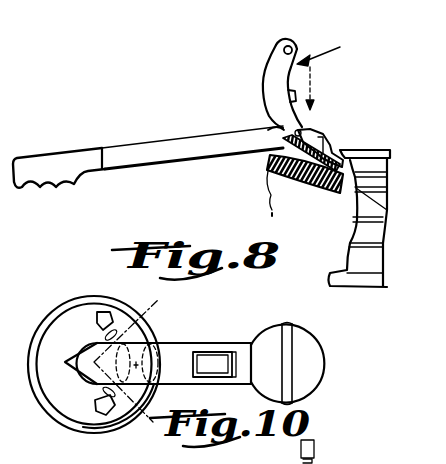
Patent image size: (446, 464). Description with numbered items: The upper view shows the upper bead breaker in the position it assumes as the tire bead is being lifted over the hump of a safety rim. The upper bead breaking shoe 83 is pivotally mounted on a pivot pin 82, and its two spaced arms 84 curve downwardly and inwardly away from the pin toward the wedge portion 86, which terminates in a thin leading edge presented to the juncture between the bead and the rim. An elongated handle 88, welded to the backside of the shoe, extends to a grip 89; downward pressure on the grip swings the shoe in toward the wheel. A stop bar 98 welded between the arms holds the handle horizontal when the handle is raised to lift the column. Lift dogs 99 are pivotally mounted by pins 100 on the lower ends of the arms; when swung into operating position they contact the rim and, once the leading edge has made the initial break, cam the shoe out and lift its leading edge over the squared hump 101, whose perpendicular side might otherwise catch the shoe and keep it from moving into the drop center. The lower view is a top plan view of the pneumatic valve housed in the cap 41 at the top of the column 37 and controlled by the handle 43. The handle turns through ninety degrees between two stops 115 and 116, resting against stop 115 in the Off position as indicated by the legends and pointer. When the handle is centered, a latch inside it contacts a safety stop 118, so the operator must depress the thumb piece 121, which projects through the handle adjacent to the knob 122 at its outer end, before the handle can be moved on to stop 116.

In FIG. 10, the column 37 is at (64, 425).
In FIG. 10, the cap 41 is at (47, 404).
In FIG. 10, the handle 43 is at (241, 343).
In FIG. 8, the pivot pin 82 is at (286, 42).
In FIG. 8, the upper bead breaking shoe 83 is at (328, 53).
In FIG. 8, the arms 84 is at (275, 76).
In FIG. 8, the wedge portion 86 is at (358, 148).
In FIG. 8, the handle 88 is at (155, 150).
In FIG. 8, the grip 89 is at (47, 166).
In FIG. 8, the stop bar 98 is at (297, 95).
In FIG. 8, the lift dogs 99 is at (325, 132).
In FIG. 8, the pins 100 is at (272, 128).
In FIG. 8, the squared hump 101 is at (364, 152).
In FIG. 10, the stop 115 is at (104, 312).
In FIG. 10, the stop 116 is at (107, 415).
In FIG. 10, the safety stop 118 is at (153, 344).
In FIG. 10, the thumb piece 121 is at (208, 371).
In FIG. 10, the knob 122 is at (304, 367).